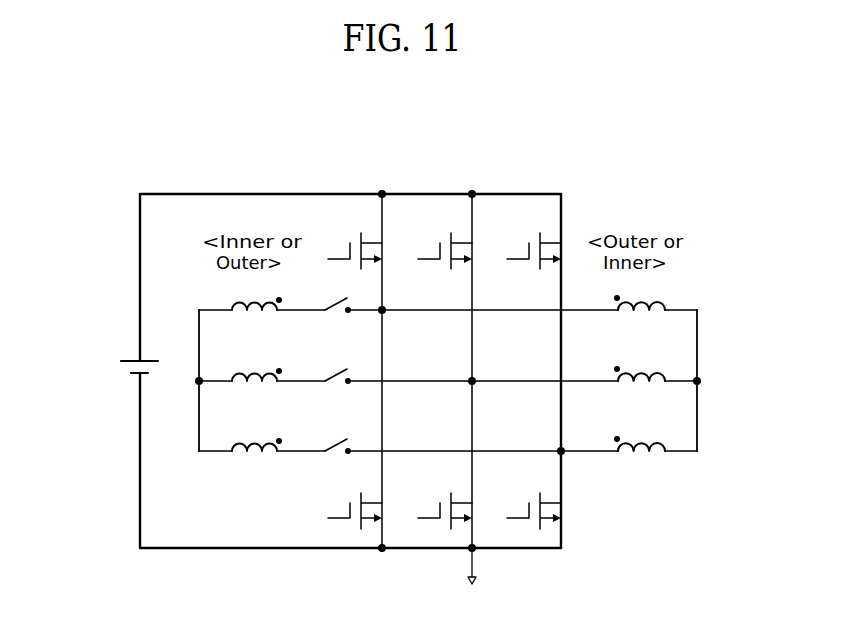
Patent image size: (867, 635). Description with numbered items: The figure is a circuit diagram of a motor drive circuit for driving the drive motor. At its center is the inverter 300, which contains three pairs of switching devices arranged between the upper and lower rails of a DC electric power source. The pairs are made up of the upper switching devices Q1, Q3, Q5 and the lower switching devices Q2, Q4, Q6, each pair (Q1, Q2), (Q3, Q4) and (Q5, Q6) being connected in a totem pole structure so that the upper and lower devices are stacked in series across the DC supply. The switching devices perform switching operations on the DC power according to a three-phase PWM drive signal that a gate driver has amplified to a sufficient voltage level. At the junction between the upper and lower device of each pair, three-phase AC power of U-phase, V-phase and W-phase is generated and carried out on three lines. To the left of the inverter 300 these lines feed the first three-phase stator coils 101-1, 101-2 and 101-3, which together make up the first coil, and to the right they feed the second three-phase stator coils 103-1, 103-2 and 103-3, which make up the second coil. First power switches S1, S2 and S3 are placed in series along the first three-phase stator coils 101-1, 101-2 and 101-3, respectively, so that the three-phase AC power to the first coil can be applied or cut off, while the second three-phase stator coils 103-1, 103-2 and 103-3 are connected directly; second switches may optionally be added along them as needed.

The inverter 300 is at (497, 158).
The first three-phase stator coil 101-1 is at (243, 311).
The first three-phase stator coil 101-2 is at (243, 382).
The first three-phase stator coil 101-3 is at (243, 453).
The second three-phase stator coil 103-1 is at (661, 304).
The second three-phase stator coil 103-2 is at (661, 375).
The second three-phase stator coil 103-3 is at (661, 445).
The upper switching device Q1 is at (355, 238).
The lower switching device Q2 is at (355, 499).
The upper switching device Q3 is at (445, 238).
The lower switching device Q4 is at (445, 499).
The upper switching device Q5 is at (534, 238).
The lower switching device Q6 is at (534, 499).
The first power switch S1 is at (336, 306).
The first power switch S2 is at (336, 377).
The first power switch S3 is at (339, 449).